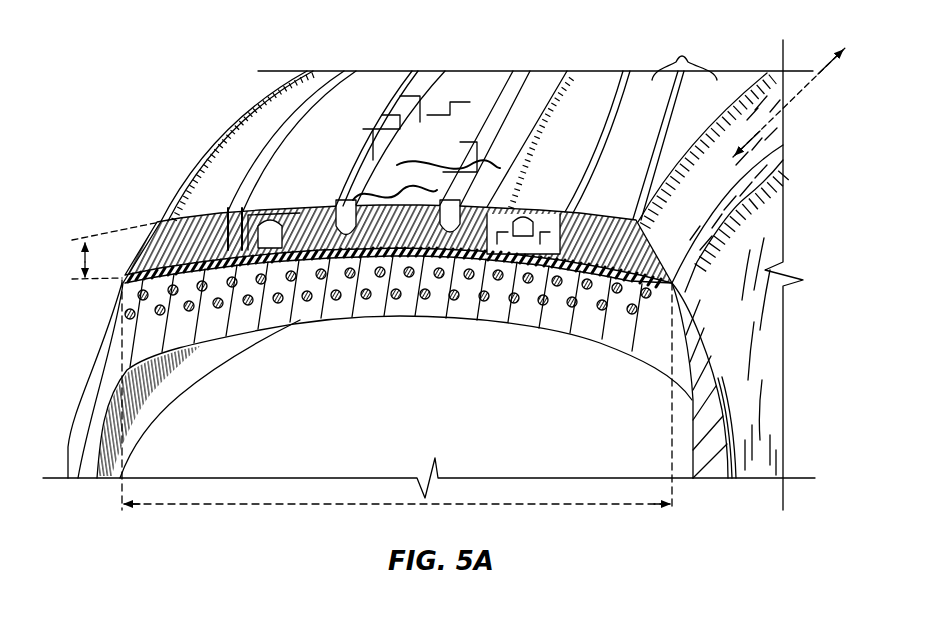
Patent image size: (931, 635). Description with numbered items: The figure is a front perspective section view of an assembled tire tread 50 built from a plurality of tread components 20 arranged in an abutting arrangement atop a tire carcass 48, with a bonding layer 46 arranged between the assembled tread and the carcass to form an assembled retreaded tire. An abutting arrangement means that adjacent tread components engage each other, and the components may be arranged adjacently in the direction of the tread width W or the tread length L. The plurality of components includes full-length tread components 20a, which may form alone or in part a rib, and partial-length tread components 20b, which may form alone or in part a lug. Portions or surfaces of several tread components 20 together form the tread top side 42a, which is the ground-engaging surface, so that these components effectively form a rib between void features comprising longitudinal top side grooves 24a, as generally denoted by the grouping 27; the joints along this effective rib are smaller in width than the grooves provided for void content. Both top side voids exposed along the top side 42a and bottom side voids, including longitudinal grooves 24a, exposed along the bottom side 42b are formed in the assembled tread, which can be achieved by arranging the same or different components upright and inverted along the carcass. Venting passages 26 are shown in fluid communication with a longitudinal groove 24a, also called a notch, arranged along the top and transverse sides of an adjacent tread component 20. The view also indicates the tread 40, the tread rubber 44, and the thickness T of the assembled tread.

The assembled tire tread 50 is at (118, 62).
The tread component 20 is at (451, 139).
The full-length tread component 20a is at (447, 115).
The partial-length tread component 20b is at (343, 175).
The longitudinal groove 24a is at (228, 210).
The venting passage 26 is at (244, 245).
The grouping 27 is at (500, 168).
The tread 40 is at (232, 128).
The top side 42a is at (275, 100).
The bottom side 42b is at (610, 270).
The tread rubber layer 44 is at (137, 255).
The bonding layer 46 is at (122, 283).
The tire carcass 48 is at (768, 367).
The tread thickness T is at (84, 260).
The tread width W is at (397, 505).
The tread length L is at (796, 96).